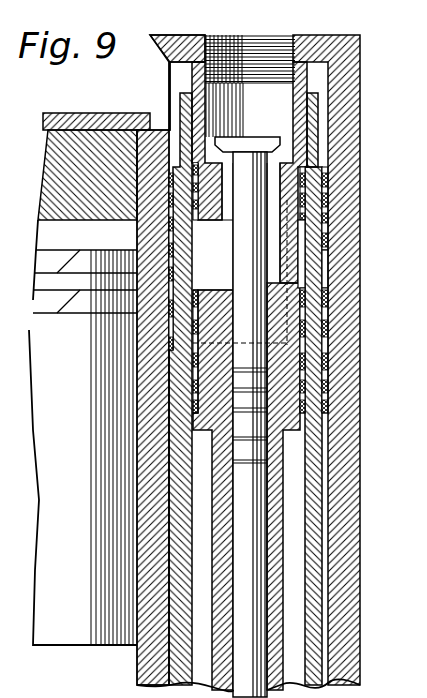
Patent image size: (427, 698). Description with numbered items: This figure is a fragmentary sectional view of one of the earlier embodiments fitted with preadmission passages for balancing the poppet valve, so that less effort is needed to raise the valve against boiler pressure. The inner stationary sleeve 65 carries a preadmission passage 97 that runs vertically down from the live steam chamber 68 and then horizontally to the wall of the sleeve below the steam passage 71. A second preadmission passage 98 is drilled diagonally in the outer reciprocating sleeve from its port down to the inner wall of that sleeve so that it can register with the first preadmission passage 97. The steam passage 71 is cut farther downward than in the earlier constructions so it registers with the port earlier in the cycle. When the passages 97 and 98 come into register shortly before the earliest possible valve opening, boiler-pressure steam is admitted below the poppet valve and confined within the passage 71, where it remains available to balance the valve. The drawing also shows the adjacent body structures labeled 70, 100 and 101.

The inner stationary sleeve 65 is at (287, 392).
The live steam chamber 68 is at (270, 113).
The bracket block 70 is at (176, 266).
The steam passage 71 is at (202, 250).
The preadmission passage 97 is at (288, 309).
The second preadmission passage 98 is at (185, 305).
The outer wall 100 is at (360, 360).
The inner tube 101 is at (366, 389).